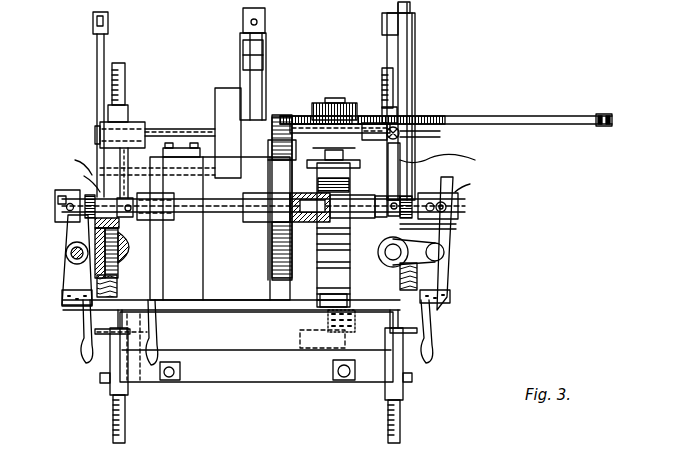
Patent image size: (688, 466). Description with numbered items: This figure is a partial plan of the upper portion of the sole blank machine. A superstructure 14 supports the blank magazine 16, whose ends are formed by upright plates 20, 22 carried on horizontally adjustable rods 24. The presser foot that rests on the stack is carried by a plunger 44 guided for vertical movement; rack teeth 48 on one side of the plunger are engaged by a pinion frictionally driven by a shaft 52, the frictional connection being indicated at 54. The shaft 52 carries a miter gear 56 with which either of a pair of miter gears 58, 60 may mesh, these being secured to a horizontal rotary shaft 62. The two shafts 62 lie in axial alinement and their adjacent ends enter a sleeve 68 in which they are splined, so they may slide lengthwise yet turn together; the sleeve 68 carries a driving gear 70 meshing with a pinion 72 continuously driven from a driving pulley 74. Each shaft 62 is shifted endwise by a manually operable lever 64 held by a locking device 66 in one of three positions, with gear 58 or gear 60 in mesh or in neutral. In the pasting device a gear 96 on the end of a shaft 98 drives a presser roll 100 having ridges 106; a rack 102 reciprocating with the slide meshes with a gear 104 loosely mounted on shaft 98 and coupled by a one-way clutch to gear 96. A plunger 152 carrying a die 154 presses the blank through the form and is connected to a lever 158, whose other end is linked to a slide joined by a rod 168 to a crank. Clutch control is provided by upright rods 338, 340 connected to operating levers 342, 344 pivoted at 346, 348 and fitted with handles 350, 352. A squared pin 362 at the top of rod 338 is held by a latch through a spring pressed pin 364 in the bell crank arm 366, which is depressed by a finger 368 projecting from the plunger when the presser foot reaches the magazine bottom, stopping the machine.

The superstructure 14 is at (222, 345).
The blank magazine 16 is at (146, 282).
The upright plate 20 is at (75, 160).
The upright plate 22 is at (110, 362).
The horizontally adjustable rod 24 is at (118, 68).
The plunger 44 is at (132, 262).
The rack teeth 48 is at (135, 245).
The shaft 52 is at (95, 262).
The frictional connection 54 is at (97, 282).
The miter gear 56 is at (93, 222).
The miter gear 58 is at (80, 196).
The miter gear 60 is at (107, 193).
The horizontal rotary shaft 62 is at (181, 197).
The manually operable lever 64 is at (68, 246).
The locking device 66 is at (80, 310).
The sleeve 68 is at (312, 226).
The driving gear 70 is at (305, 337).
The pinion 72 is at (282, 124).
The driving pulley 74 is at (228, 96).
The gear 96 is at (357, 105).
The shaft 98 is at (331, 98).
The presser roll 100 is at (326, 318).
The rack 102 is at (456, 117).
The gear 104 is at (290, 115).
The ridges 106 is at (332, 293).
The plunger 152 is at (270, 260).
The die 154 is at (270, 236).
The lever 158 is at (256, 80).
The rod 168 is at (266, 23).
The upright rod 338 is at (414, 26).
The upright rod 340 is at (92, 25).
The operating lever 342 is at (408, 52).
The operating lever 344 is at (96, 56).
The pivot 346 is at (450, 124).
The pivot 348 is at (99, 135).
The handle 350 is at (380, 383).
The handle 352 is at (152, 368).
The squared pin 362 is at (386, 18).
The spring pressed pin 364 is at (412, 137).
The arm 366 is at (398, 112).
The finger 368 is at (456, 227).